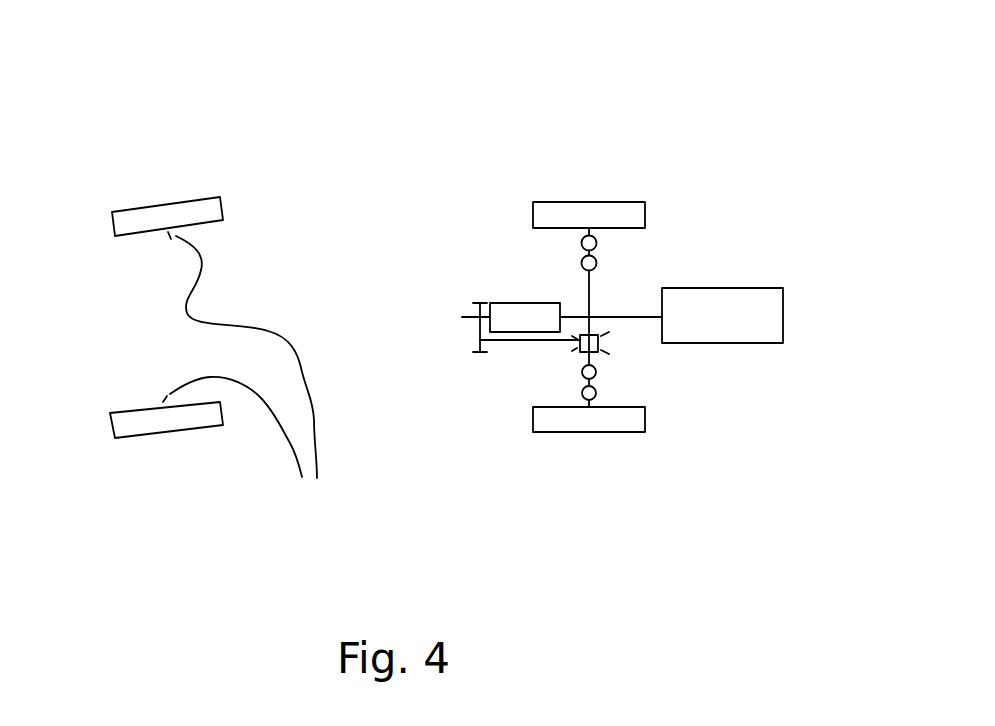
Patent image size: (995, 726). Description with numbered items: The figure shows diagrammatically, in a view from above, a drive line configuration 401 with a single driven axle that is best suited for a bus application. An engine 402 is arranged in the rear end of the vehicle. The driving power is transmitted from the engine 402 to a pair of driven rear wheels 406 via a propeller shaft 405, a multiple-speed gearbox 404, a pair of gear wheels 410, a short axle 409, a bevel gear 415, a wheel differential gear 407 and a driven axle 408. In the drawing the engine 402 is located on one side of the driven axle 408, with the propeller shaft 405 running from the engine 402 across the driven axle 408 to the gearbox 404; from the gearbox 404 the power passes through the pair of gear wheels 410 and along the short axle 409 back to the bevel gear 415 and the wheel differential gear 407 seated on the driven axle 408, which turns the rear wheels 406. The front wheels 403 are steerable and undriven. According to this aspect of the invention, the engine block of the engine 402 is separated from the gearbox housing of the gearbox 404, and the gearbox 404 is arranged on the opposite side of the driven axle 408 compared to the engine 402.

The drive line configuration 401 is at (223, 112).
The engine 402 is at (727, 330).
The front wheels 403 is at (233, 361).
The multiple-speed gearbox 404 is at (527, 303).
The propeller shaft 405 is at (617, 316).
The driven rear wheels 406 is at (533, 418).
The wheel differential gear 407 is at (600, 347).
The driven axle 408 is at (591, 294).
The short axle 409 is at (518, 342).
The pair of gear wheels 410 is at (472, 332).
The bevel gear 415 is at (601, 337).